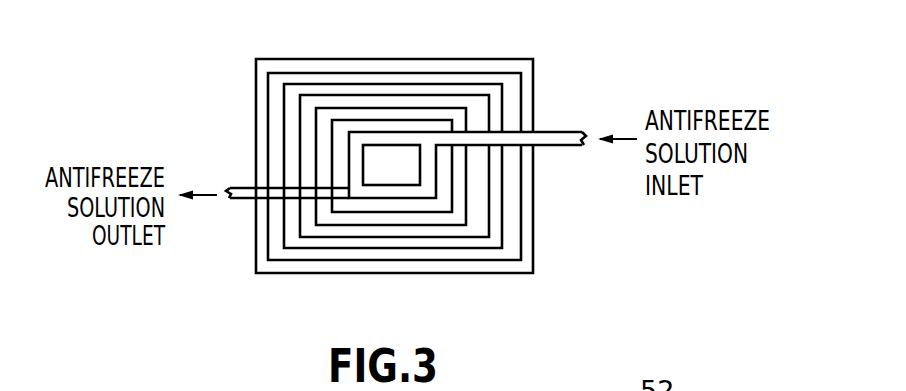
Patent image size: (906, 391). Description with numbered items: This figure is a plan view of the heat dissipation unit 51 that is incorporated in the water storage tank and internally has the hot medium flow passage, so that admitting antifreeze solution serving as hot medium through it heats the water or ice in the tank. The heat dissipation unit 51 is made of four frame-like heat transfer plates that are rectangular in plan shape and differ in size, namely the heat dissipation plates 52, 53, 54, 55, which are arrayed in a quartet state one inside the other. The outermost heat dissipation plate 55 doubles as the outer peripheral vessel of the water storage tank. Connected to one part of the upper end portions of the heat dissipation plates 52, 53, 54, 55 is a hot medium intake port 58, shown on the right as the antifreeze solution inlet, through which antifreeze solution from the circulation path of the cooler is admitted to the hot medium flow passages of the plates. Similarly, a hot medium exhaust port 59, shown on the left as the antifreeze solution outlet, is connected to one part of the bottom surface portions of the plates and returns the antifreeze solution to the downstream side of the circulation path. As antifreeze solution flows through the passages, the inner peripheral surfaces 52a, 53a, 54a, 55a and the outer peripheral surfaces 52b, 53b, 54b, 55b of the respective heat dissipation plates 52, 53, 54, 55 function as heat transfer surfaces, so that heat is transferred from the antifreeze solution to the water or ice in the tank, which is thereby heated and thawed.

The heat dissipation unit 51 is at (558, 96).
The heat dissipation plate 52 is at (393, 192).
The inner peripheral surface 52a is at (364, 160).
The outer peripheral surface 52b is at (375, 195).
The heat dissipation plate 53 is at (440, 217).
The inner peripheral surface 53a is at (334, 128).
The outer peripheral surface 53b is at (342, 220).
The heat dissipation plate 54 is at (495, 215).
The inner peripheral surface 54a is at (300, 126).
The outer peripheral surface 54b is at (290, 253).
The heat dissipation plate 55 is at (527, 252).
The inner peripheral surface 55a is at (268, 142).
The outer peripheral surface 55b is at (255, 143).
The hot medium intake port 58 is at (548, 146).
The hot medium exhaust port 59 is at (245, 200).